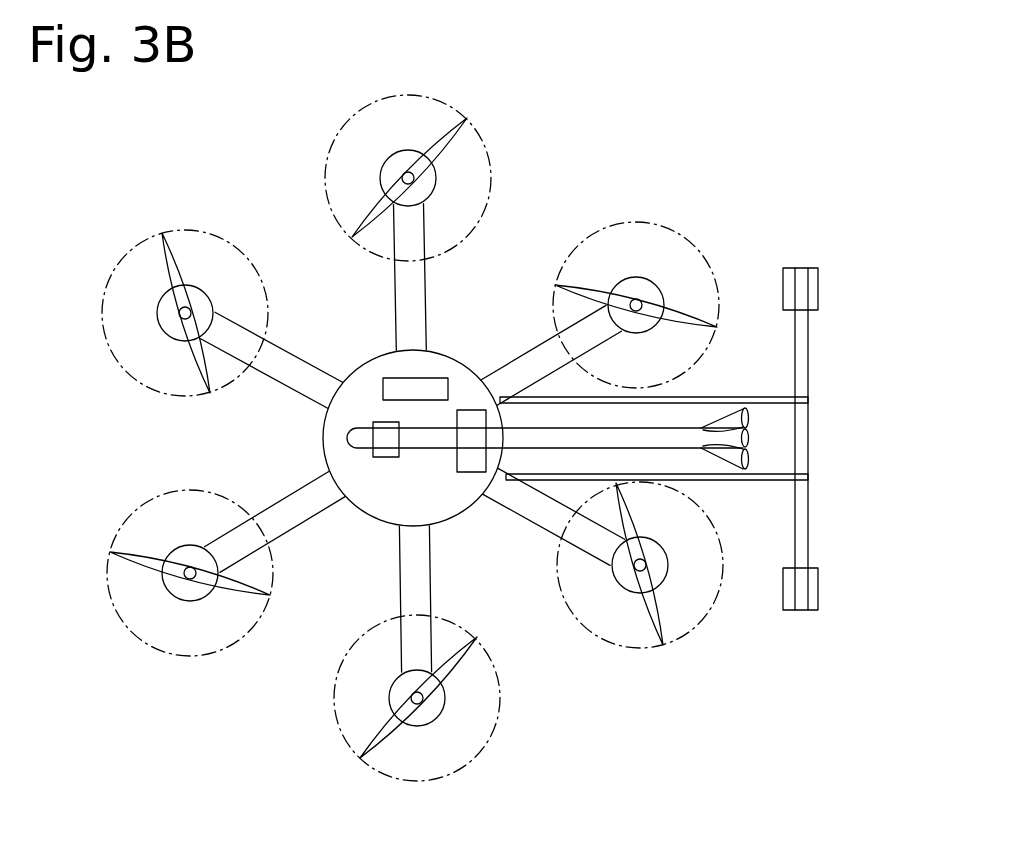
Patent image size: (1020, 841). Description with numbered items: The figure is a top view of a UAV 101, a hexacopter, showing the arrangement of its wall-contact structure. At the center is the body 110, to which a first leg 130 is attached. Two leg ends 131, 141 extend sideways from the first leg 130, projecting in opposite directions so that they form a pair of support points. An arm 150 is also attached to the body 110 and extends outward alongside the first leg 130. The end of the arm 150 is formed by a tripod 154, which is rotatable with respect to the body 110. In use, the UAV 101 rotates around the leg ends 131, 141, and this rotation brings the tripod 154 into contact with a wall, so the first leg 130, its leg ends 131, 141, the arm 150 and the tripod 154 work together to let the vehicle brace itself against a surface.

The UAV 101 is at (610, 181).
The body 110 is at (375, 493).
The first leg 130 is at (760, 478).
The leg end 131 is at (808, 597).
The leg end 141 is at (813, 281).
The arm 150 is at (538, 447).
The tripod 154 is at (742, 409).